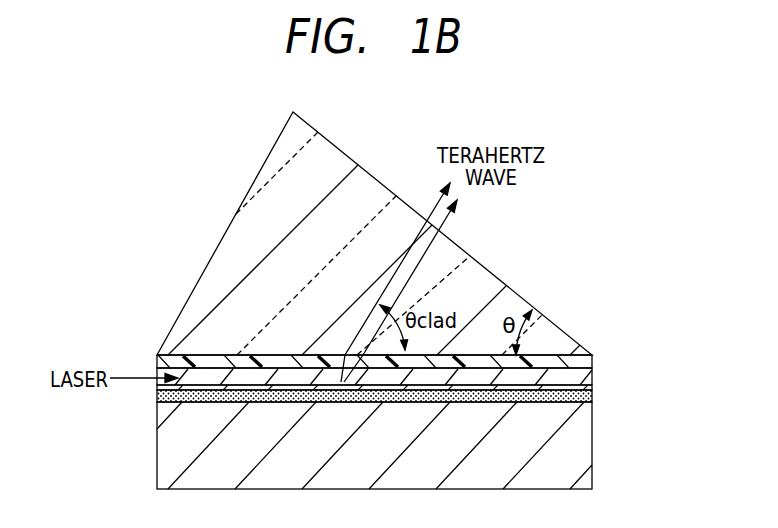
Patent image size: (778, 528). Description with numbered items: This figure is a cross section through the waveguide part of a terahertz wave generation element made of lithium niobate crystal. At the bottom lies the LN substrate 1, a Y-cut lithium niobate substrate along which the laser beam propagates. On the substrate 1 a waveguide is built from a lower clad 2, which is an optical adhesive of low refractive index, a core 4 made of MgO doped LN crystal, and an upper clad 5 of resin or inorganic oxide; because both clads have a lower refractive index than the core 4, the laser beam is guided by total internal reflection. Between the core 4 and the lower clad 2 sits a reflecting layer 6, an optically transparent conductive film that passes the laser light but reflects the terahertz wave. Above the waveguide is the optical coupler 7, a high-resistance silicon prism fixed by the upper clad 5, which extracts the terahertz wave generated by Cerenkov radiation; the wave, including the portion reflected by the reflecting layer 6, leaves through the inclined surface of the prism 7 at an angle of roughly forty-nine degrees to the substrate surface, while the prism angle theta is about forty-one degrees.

The LN substrate 1 is at (585, 450).
The lower clad 2 is at (592, 398).
The core 4 is at (592, 377).
The upper clad 5 is at (592, 362).
The reflecting layer 6 is at (592, 387).
The optical coupler 7 is at (482, 275).